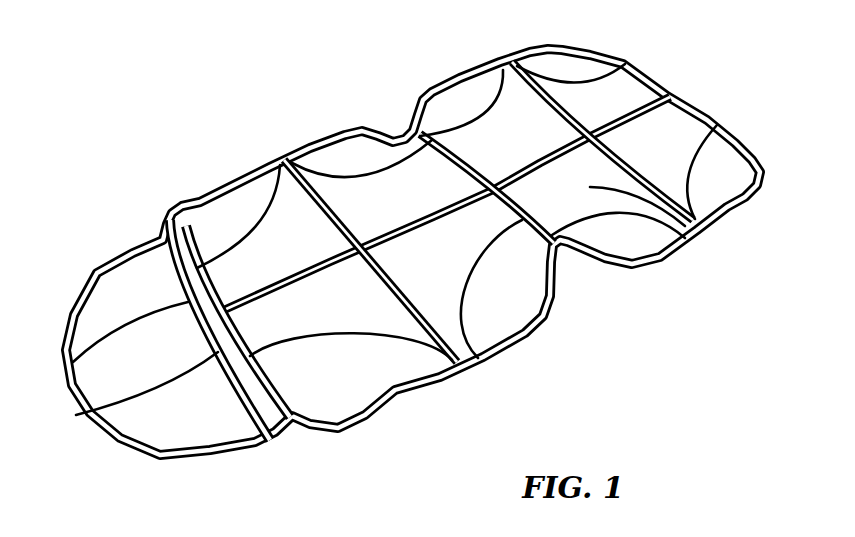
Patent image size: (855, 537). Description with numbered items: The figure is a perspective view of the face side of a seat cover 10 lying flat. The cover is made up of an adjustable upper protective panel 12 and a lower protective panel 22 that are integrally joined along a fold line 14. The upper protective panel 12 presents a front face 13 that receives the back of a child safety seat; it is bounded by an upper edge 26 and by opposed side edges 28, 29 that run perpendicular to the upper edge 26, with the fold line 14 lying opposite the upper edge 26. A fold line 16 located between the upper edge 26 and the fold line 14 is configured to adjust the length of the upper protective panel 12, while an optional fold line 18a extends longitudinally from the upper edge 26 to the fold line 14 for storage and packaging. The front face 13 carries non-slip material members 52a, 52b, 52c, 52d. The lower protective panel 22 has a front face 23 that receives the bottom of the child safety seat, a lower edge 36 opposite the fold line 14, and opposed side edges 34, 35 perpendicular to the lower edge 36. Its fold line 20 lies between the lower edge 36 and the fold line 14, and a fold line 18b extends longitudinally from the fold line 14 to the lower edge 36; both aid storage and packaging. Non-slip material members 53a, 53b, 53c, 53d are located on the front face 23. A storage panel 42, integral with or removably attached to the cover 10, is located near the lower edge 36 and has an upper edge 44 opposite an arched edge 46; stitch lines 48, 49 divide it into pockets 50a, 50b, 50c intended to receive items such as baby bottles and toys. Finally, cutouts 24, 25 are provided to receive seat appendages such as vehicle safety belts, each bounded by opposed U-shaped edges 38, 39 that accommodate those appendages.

The seat cover 10 is at (636, 45).
The adjustable upper protective panel 12 is at (619, 101).
The front face 13 is at (693, 212).
The fold line 14 is at (457, 160).
The fold line 16 is at (518, 78).
The fold line 18a is at (670, 102).
The fold line 18b is at (433, 217).
The fold line 20 is at (287, 167).
The lower protective panel 22 is at (367, 302).
The front face 23 is at (340, 316).
The cutout 24 is at (566, 266).
The cutout 25 is at (400, 121).
The upper edge 26 is at (713, 121).
The side edge 28 is at (718, 218).
The side edge 29 is at (552, 47).
The side edge 34 is at (507, 342).
The side edge 35 is at (307, 143).
The lower edge 36 is at (291, 414).
The U shaped edge 38 is at (567, 247).
The U shaped edge 39 is at (393, 131).
The storage panel 42 is at (262, 385).
The upper edge 44 is at (159, 250).
The arched edge 46 is at (123, 440).
The stitch line 48 is at (106, 428).
The stitch line 49 is at (77, 327).
The pocket 50a is at (183, 420).
The pocket 50b is at (117, 381).
The pocket 50c is at (113, 303).
The non-slip material member 52a is at (550, 79).
The non-slip material member 52b is at (697, 185).
The non-slip material member 52c is at (600, 247).
The non-slip material member 52d is at (437, 119).
The non-slip material member 53a is at (340, 170).
The non-slip material member 53b is at (477, 304).
The non-slip material member 53c is at (327, 387).
The non-slip material member 53d is at (197, 235).